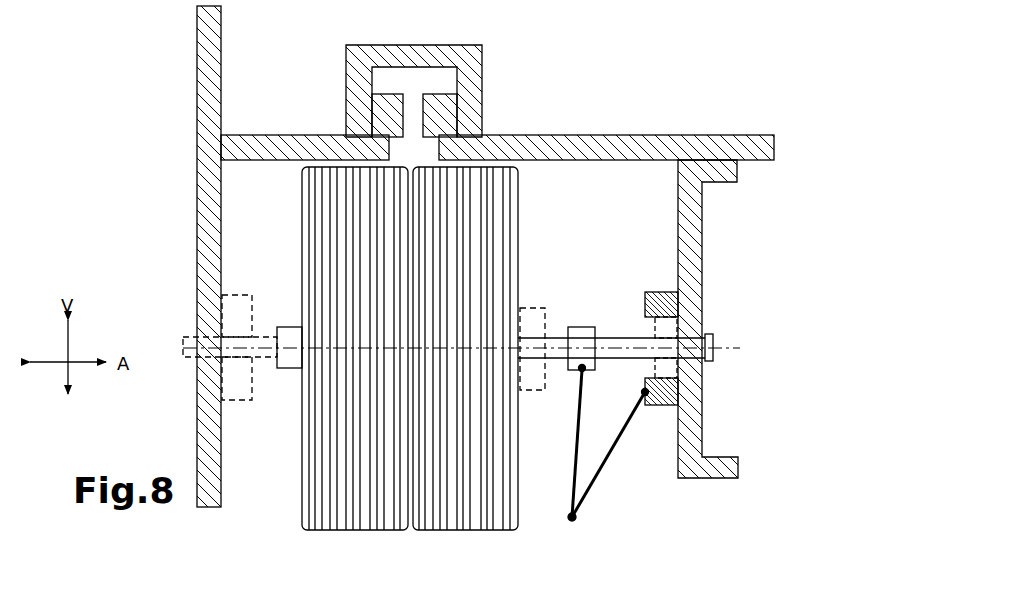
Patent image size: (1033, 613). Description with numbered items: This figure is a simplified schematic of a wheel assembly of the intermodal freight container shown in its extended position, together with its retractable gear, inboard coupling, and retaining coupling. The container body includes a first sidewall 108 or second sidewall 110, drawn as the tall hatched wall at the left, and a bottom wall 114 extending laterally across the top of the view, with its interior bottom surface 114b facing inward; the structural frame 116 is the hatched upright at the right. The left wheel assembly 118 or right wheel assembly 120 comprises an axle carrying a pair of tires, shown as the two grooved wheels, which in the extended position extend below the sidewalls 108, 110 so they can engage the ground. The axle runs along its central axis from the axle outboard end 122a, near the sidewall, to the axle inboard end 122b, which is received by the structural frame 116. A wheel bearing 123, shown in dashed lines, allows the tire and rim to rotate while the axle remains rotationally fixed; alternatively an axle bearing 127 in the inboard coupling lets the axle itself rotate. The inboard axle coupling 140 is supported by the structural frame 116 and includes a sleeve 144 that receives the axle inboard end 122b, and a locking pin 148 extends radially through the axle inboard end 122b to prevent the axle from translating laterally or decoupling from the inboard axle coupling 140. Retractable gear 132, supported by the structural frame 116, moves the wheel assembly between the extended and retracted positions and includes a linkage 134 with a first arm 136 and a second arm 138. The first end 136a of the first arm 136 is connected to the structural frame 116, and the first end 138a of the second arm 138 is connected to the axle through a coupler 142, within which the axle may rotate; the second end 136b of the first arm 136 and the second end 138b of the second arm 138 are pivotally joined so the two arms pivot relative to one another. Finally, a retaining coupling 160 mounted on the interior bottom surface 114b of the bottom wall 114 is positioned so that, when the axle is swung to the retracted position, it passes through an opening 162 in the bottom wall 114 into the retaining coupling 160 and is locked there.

The first sidewall 108 is at (135, 256).
The second sidewall 110 is at (212, 108).
The bottom wall 114 is at (504, 105).
The interior bottom surface 114b is at (693, 137).
The structural frame 116 is at (693, 220).
The left wheel assembly 118 is at (280, 348).
The right wheel assembly 120 is at (410, 348).
The axle outboard end 122a is at (277, 372).
The axle inboard end 122b is at (764, 384).
The wheel bearing 123 is at (528, 308).
The axle bearing 127 is at (678, 325).
The retractable gear 132 is at (590, 489).
The linkage 134 is at (590, 484).
The first arm 136 is at (663, 474).
The first end of first arm 136a is at (630, 422).
The second end of first arm 136b is at (583, 498).
The second arm 138 is at (573, 442).
The first end of second arm 138a is at (577, 388).
The second end of second arm 138b is at (568, 500).
The inboard axle coupling 140 is at (749, 317).
The coupler 142 is at (583, 327).
The sleeve 144 is at (663, 292).
The locking pin 148 is at (712, 365).
The retaining coupling 160 is at (458, 68).
The opening 162 is at (413, 117).